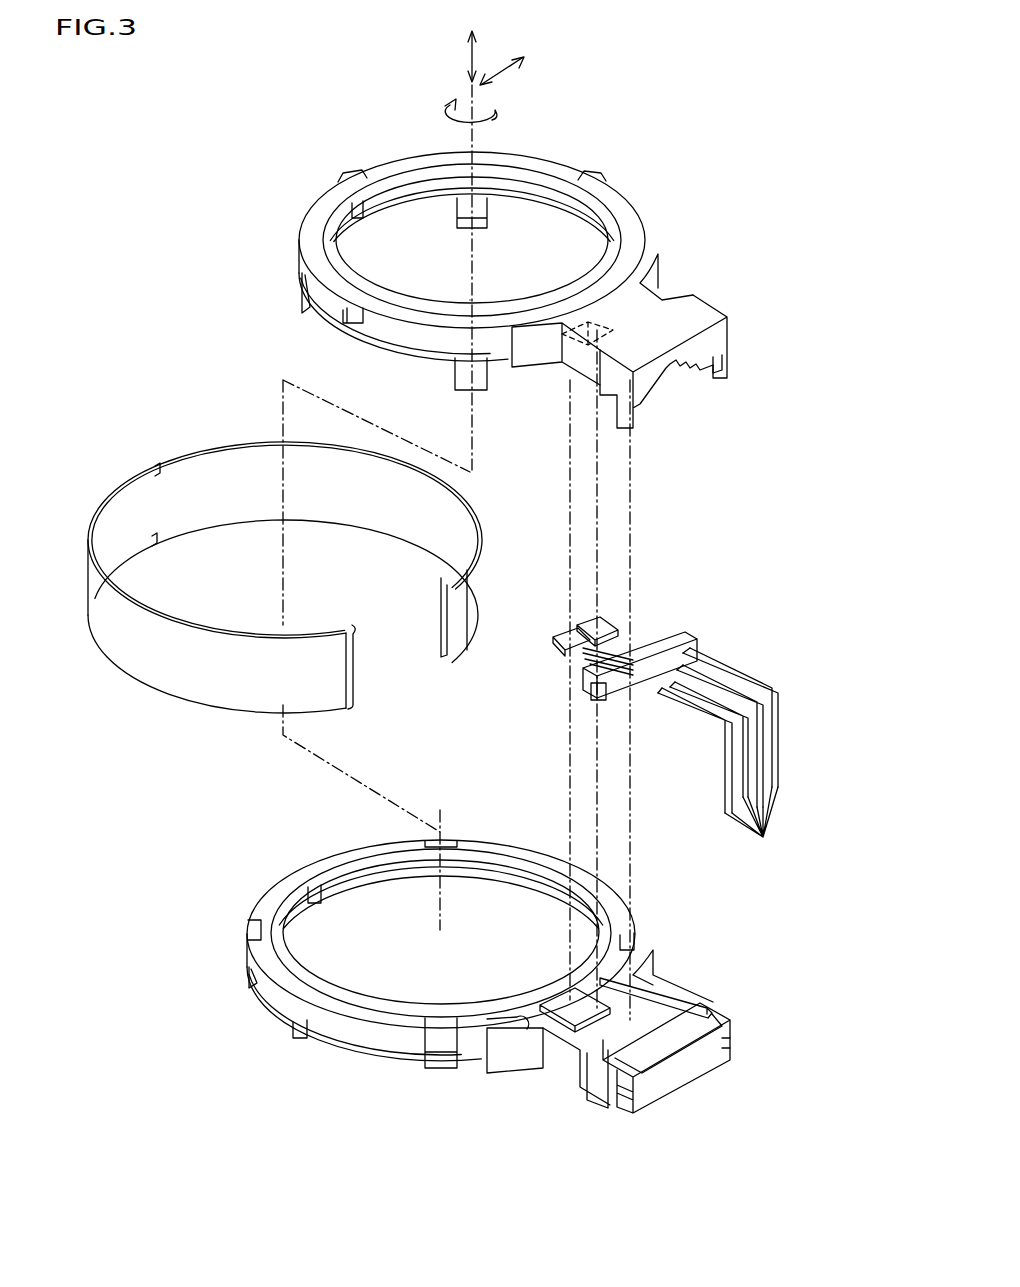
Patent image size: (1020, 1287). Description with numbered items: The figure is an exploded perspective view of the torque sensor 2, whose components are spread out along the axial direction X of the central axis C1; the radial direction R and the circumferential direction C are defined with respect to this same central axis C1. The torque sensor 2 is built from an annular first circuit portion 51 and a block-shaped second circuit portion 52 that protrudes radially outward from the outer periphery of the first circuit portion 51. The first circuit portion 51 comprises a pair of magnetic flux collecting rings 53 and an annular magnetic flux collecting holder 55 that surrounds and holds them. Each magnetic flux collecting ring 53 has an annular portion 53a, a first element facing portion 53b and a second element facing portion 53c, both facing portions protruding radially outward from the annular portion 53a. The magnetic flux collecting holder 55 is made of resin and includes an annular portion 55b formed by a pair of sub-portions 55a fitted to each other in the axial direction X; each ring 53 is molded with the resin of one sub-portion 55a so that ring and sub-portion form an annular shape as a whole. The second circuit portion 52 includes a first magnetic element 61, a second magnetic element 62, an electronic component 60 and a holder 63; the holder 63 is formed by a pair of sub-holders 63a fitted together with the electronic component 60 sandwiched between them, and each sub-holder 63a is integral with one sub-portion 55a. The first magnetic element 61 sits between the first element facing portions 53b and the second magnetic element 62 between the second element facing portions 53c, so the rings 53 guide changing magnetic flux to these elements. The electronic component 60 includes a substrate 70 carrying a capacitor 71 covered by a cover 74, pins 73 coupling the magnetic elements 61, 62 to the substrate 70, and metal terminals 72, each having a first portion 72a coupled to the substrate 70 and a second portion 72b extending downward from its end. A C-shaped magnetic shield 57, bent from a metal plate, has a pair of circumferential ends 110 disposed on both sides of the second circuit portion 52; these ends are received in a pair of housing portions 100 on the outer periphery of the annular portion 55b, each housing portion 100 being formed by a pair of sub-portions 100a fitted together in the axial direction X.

The torque sensor 2 is at (693, 186).
The first circuit portion 51 is at (412, 255).
The second circuit portion 52 is at (710, 326).
The magnetic flux collecting ring 53 is at (553, 184).
The annular portion 53a is at (430, 188).
The first element facing portion 53b is at (524, 355).
The second element facing portion 53c is at (596, 322).
The magnetic flux collecting holder 55 is at (374, 162).
The sub-portion 55a is at (327, 195).
The annular portion 55b is at (344, 263).
The magnetic shield 57 is at (165, 675).
The electronic component 60 is at (690, 620).
The first magnetic element 61 is at (560, 635).
The second magnetic element 62 is at (590, 625).
The holder 63 is at (710, 326).
The sub-holder 63a is at (683, 318).
The substrate 70 is at (645, 645).
The capacitor 71 is at (630, 660).
The terminal 72 is at (746, 749).
The first portion 72a is at (752, 688).
The second portion 72b is at (766, 832).
The pin 73 is at (580, 655).
The cover 74 is at (590, 692).
The housing portion 100 is at (720, 262).
The sub-portion 100a is at (660, 246).
The circumferential end 110 is at (337, 620).
The axial direction X is at (468, 50).
The circumferential direction C is at (448, 96).
The radial direction R is at (490, 93).
The central axis C1 is at (476, 131).